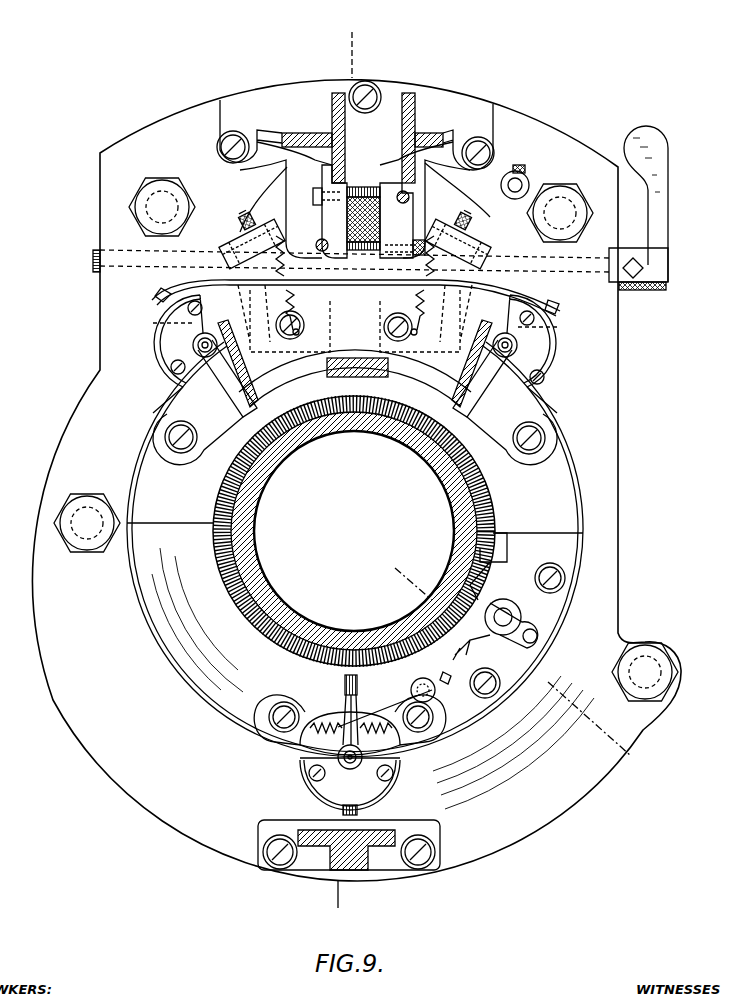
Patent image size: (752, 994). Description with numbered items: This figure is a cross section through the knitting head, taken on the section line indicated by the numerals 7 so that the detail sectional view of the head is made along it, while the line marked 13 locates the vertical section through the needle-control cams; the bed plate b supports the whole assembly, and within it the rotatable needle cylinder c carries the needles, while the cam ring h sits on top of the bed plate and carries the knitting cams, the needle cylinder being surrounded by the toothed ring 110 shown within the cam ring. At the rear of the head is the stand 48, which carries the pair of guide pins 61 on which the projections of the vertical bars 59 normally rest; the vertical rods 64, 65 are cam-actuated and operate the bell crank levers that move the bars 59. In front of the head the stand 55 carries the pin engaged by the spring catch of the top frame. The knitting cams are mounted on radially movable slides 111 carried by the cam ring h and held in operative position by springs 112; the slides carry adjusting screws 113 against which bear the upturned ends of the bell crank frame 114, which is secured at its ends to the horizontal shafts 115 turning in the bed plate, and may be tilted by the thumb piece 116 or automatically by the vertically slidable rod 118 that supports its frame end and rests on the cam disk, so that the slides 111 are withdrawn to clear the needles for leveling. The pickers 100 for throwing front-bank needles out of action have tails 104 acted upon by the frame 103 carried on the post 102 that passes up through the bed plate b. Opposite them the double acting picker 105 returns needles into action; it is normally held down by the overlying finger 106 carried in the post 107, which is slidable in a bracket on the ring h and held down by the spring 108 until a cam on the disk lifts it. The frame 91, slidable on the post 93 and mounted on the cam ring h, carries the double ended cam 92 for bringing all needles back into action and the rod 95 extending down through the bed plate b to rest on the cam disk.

The section line 7— 7 is at (348, 472).
The stand 48 is at (412, 128).
The guide pins 61 is at (364, 250).
The vertical rod 64 is at (401, 193).
The vertical rod 65 is at (320, 240).
The vertical bars 59 is at (380, 224).
The adjusting screws 113 is at (466, 222).
The radially movable slides 111 is at (448, 237).
The frame 103 is at (331, 225).
The vertically slidable rod 118 is at (401, 234).
The post 102 is at (522, 185).
The thumb piece 116 is at (660, 210).
The horizontal shafts 115 is at (96, 258).
The tails 104 is at (561, 310).
The bell crank frame 114 is at (505, 289).
The springs 112 is at (355, 294).
The pickers 100 is at (475, 390).
The stator ring 110 is at (341, 421).
The cam ring h is at (578, 514).
The needle cylinder c is at (255, 538).
The section line 13— 13 is at (520, 659).
The double ended cam 92 is at (500, 553).
The post 93 is at (508, 618).
The rod 95 is at (540, 637).
The frame 91 is at (478, 648).
The spring 108 is at (450, 676).
The double acting picker 105 is at (345, 686).
The finger 106 is at (360, 715).
The post 107 is at (432, 703).
The bed plate b is at (578, 805).
The stand 55 is at (382, 868).